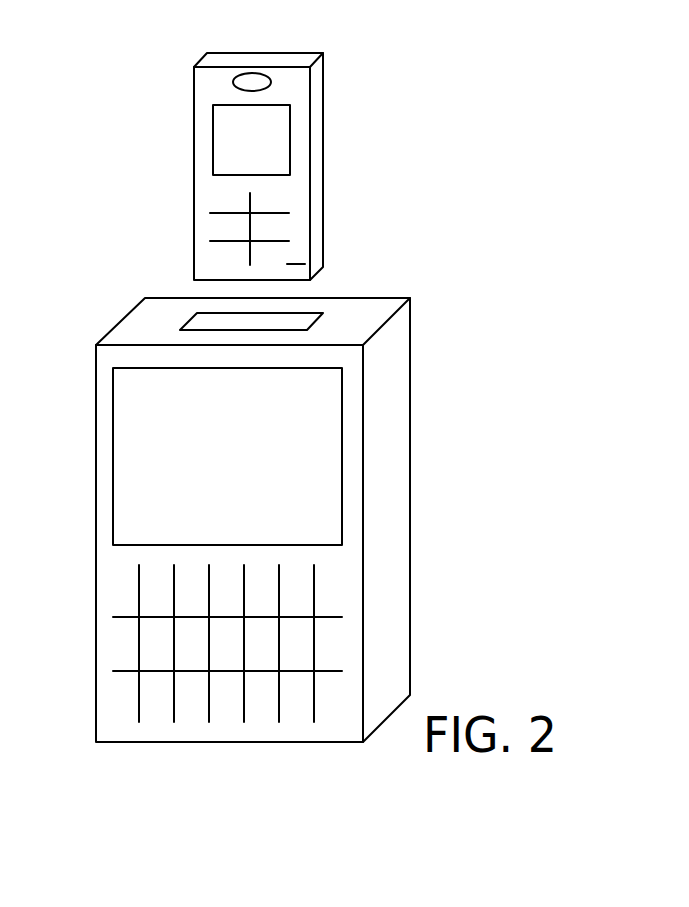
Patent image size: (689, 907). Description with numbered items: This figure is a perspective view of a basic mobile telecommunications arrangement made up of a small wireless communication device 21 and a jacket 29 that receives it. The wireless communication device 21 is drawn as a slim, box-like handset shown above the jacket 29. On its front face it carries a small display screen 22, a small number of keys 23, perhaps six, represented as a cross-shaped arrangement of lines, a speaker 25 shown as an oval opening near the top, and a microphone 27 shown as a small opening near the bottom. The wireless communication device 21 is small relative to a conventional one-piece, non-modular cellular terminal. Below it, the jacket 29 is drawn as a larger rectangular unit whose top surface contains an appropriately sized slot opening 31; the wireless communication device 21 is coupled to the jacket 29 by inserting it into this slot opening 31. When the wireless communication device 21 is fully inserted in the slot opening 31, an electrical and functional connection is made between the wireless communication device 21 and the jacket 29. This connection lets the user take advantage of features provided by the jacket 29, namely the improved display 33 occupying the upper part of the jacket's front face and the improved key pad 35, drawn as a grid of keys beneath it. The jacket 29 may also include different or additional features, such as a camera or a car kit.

The wireless communication device 21 is at (170, 182).
The display screen 22 is at (275, 146).
The keys 23 is at (275, 202).
The speaker 25 is at (252, 81).
The microphone 27 is at (294, 263).
The jacket 29 is at (426, 475).
The slot opening 31 is at (205, 318).
The improved display 33 is at (242, 471).
The improved key pad 35 is at (152, 697).